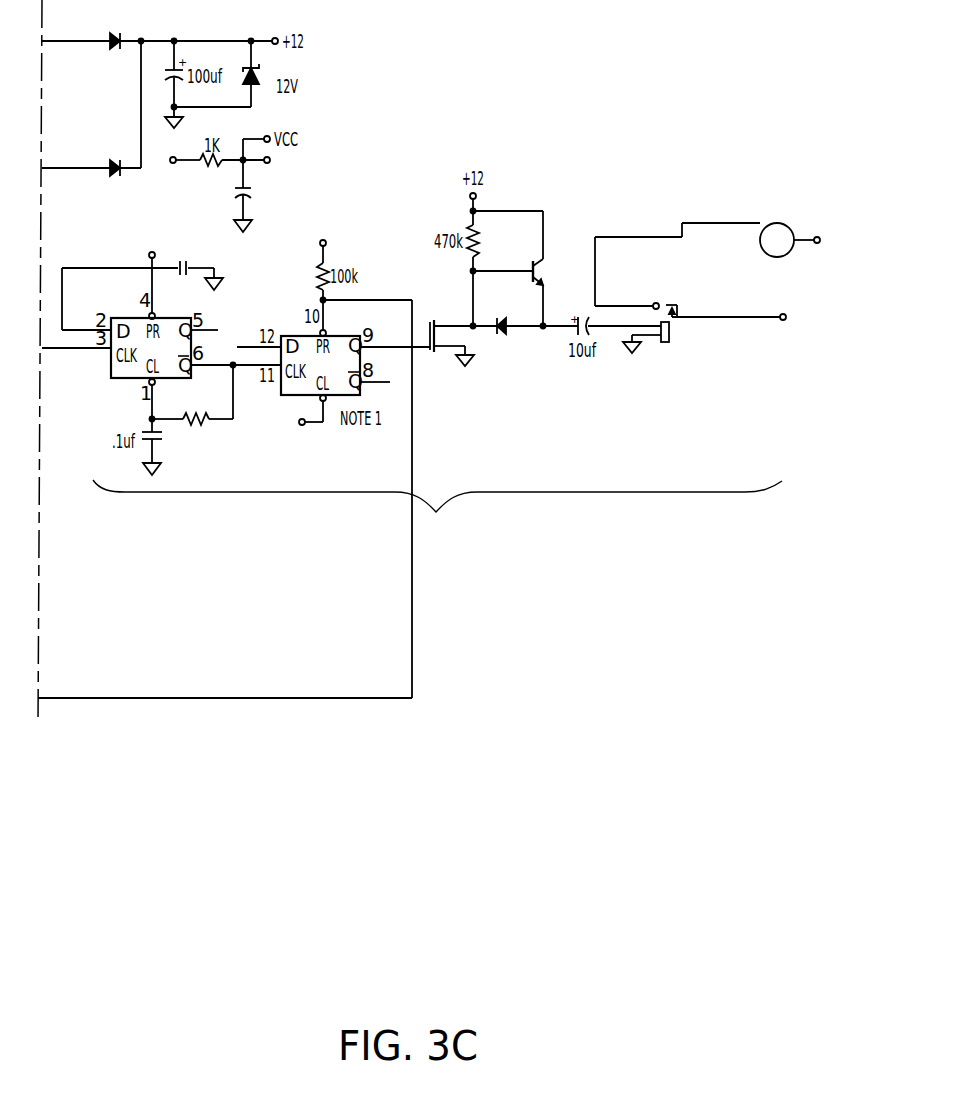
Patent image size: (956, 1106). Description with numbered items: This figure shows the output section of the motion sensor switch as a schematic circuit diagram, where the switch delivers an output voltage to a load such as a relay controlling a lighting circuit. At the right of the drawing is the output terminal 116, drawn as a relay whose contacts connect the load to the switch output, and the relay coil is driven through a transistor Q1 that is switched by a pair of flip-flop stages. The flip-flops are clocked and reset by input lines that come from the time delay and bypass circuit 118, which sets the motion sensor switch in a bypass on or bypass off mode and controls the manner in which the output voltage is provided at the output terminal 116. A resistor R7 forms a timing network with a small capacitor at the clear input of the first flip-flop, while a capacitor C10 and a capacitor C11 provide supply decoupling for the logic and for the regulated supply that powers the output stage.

The output terminal 116 is at (606, 328).
The time delay and bypass circuit 118 is at (225, 664).
The MOSFET transistor Q1 is at (443, 321).
The resistor R7 (40.0k) R7 is at (192, 421).
The capacitor C10 (.1uF) C10 is at (198, 252).
The capacitor C11 (10uF 110V) C11 is at (276, 203).